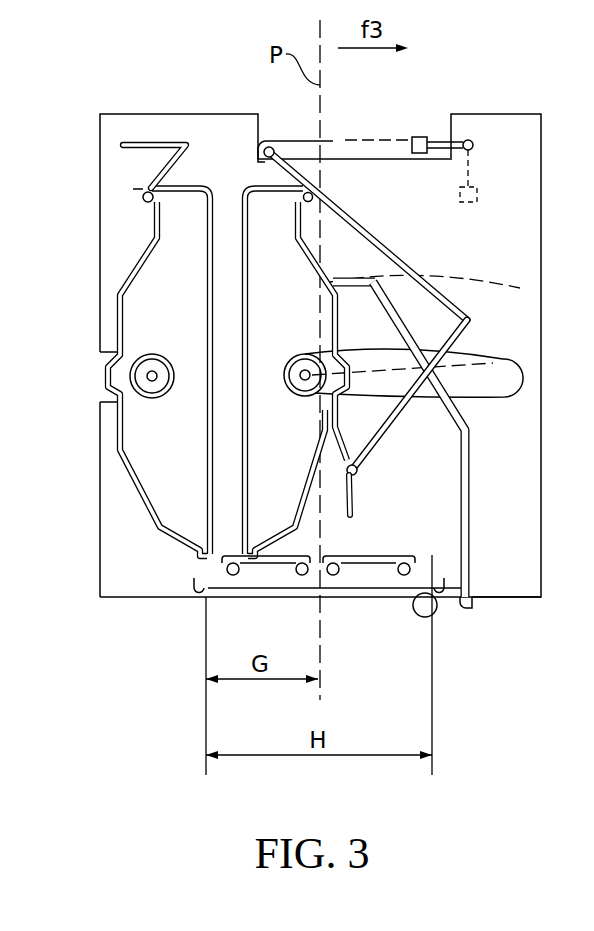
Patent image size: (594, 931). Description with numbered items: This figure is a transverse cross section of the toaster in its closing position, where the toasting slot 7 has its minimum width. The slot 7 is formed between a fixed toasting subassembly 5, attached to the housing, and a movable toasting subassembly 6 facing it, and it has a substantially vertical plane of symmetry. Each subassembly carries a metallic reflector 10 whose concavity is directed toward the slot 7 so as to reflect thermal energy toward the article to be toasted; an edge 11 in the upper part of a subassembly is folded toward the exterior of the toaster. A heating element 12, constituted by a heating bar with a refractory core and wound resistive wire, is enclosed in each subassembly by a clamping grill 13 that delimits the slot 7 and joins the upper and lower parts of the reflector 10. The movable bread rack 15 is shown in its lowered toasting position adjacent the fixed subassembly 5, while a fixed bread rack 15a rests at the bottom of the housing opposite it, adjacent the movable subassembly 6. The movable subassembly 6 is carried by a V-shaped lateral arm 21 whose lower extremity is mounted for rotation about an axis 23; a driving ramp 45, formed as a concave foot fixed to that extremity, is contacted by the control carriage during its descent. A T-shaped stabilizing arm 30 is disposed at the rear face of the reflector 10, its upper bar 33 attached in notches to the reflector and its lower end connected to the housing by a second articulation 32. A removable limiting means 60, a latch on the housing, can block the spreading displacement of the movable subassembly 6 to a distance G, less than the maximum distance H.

The fixed toasting subassembly 5 is at (126, 243).
The movable toasting subassembly 6 is at (458, 265).
The toasting slot 7 is at (226, 188).
The reflector 10 is at (118, 432).
The edge 11 is at (157, 142).
The heating element 12 is at (144, 375).
The clamping grill 13 is at (205, 291).
The movable bread rack 15 is at (270, 563).
The fixed bread rack 15a is at (362, 563).
The lateral arm 21 is at (353, 210).
The axis 23 is at (360, 472).
The stabilizing arm 30 is at (473, 483).
The second articulation 32 is at (425, 618).
The upper bar 33 is at (348, 283).
The driving ramp 45 is at (356, 513).
The removable limiting means 60 is at (425, 137).